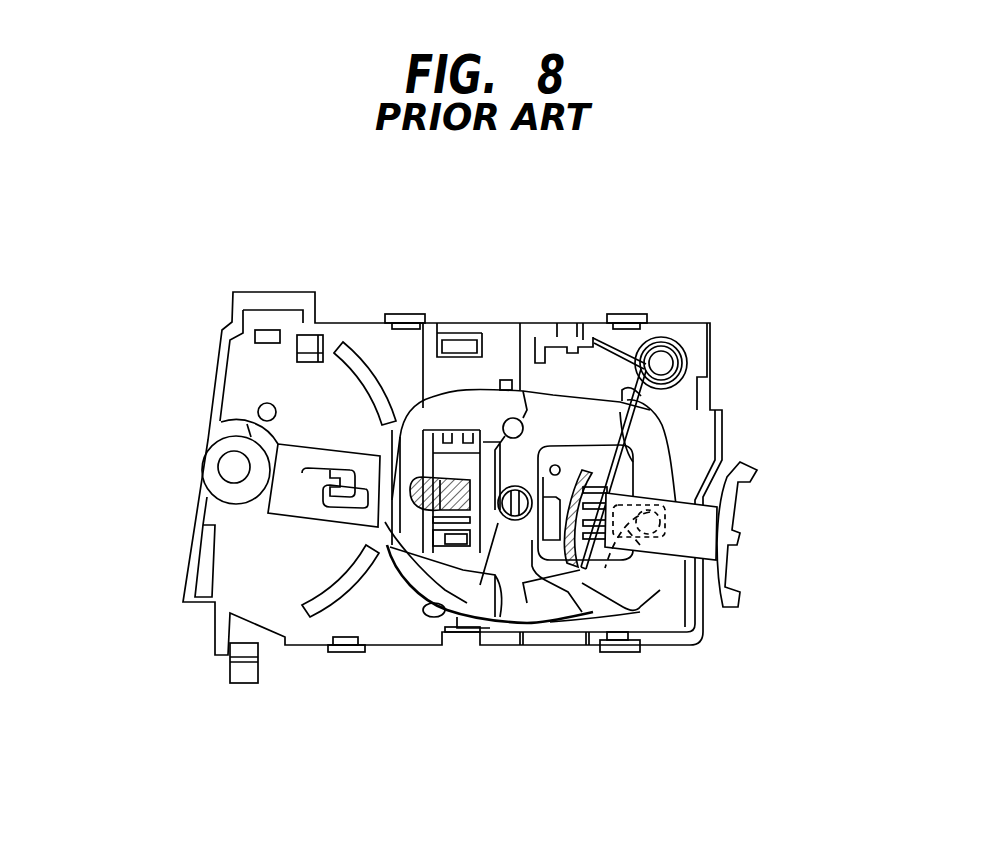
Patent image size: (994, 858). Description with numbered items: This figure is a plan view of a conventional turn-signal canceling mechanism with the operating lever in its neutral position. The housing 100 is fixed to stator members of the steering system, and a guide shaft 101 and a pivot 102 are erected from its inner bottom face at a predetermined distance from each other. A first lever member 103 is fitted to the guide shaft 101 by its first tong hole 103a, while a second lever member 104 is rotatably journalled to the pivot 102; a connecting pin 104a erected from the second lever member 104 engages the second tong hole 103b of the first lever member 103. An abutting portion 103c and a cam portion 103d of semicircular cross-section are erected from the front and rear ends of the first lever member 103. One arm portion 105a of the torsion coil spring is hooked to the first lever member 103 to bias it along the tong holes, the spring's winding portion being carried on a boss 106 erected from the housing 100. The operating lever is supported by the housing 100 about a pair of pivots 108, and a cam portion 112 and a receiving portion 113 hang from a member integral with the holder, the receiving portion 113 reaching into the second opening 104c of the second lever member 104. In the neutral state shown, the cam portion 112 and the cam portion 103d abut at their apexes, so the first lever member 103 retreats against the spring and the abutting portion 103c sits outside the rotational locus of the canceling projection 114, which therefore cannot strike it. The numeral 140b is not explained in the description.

The housing 100 is at (208, 628).
The guide shaft 101 is at (553, 520).
The pivot 102 is at (426, 609).
The first lever member 103 is at (656, 563).
The first tong hole 103a is at (591, 490).
The second tong hole 103b is at (640, 545).
The abutting portion 103c is at (700, 550).
The cam portion 103d is at (480, 585).
The second lever member 104 is at (409, 399).
The connecting pin 104a is at (650, 512).
The second opening 104c is at (420, 520).
The one arm portion 105a is at (597, 485).
The boss 106 is at (663, 362).
The pivots 108 is at (232, 467).
The cam portion 112 is at (566, 488).
The receiving portion 113 is at (452, 482).
The canceling projection 114 is at (740, 470).
The rod end 140b is at (568, 592).